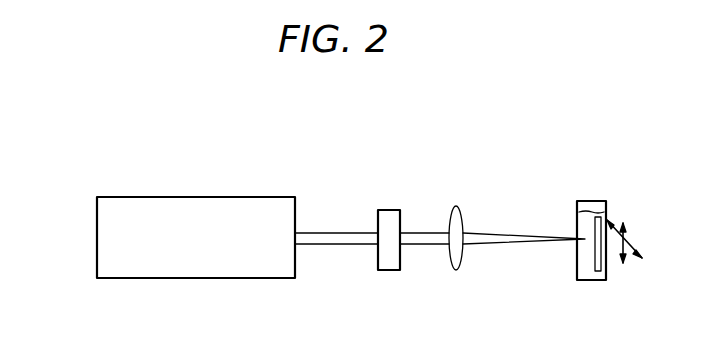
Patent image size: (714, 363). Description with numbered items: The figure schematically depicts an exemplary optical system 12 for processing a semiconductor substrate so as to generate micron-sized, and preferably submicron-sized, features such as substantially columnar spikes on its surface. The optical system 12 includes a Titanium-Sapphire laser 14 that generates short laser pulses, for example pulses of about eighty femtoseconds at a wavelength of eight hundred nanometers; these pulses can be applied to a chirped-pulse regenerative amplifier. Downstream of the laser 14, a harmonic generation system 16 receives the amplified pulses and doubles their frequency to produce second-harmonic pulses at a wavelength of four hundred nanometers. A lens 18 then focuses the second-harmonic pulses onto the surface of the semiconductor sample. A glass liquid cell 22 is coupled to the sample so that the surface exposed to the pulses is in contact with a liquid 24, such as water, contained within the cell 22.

The optical system 12 is at (243, 158).
The Titanium-Sapphire laser 14 is at (97, 232).
The harmonic generation system 16 is at (387, 270).
The lens 18 is at (455, 270).
The glass liquid cell 22 is at (572, 275).
The liquid 24 is at (591, 211).